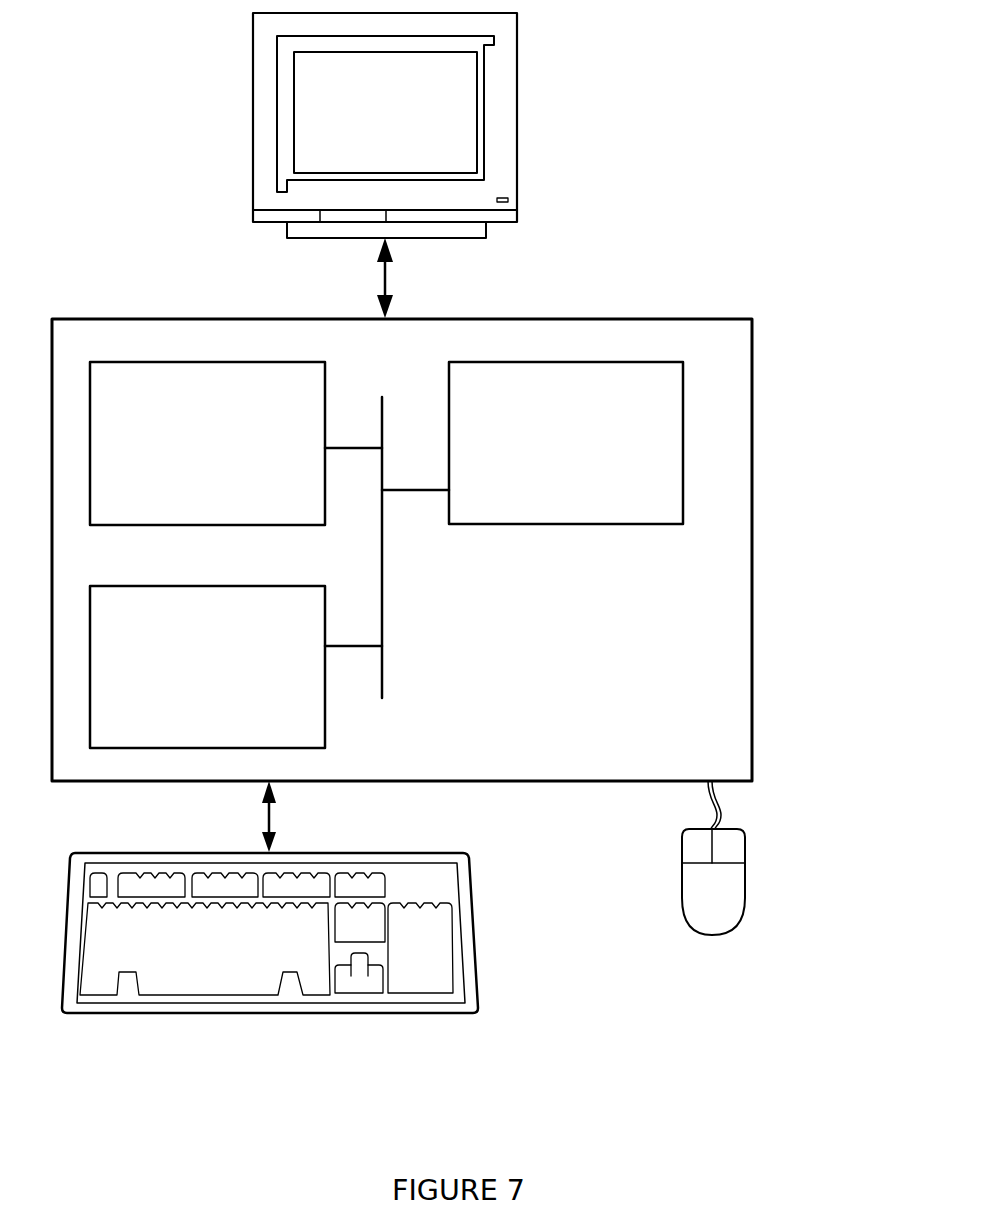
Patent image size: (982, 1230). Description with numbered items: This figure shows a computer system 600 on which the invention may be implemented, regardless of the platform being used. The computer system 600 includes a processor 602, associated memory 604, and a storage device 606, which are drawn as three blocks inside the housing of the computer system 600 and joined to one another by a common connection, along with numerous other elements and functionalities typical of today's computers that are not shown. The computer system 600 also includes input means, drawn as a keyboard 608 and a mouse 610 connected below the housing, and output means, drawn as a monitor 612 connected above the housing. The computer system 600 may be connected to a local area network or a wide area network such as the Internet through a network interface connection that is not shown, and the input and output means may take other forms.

The computer system 600 is at (772, 170).
The processor 602 is at (606, 457).
The memory 604 is at (229, 458).
The storage device 606 is at (225, 680).
The keyboard 608 is at (220, 973).
The mouse 610 is at (733, 905).
The monitor 612 is at (406, 132).